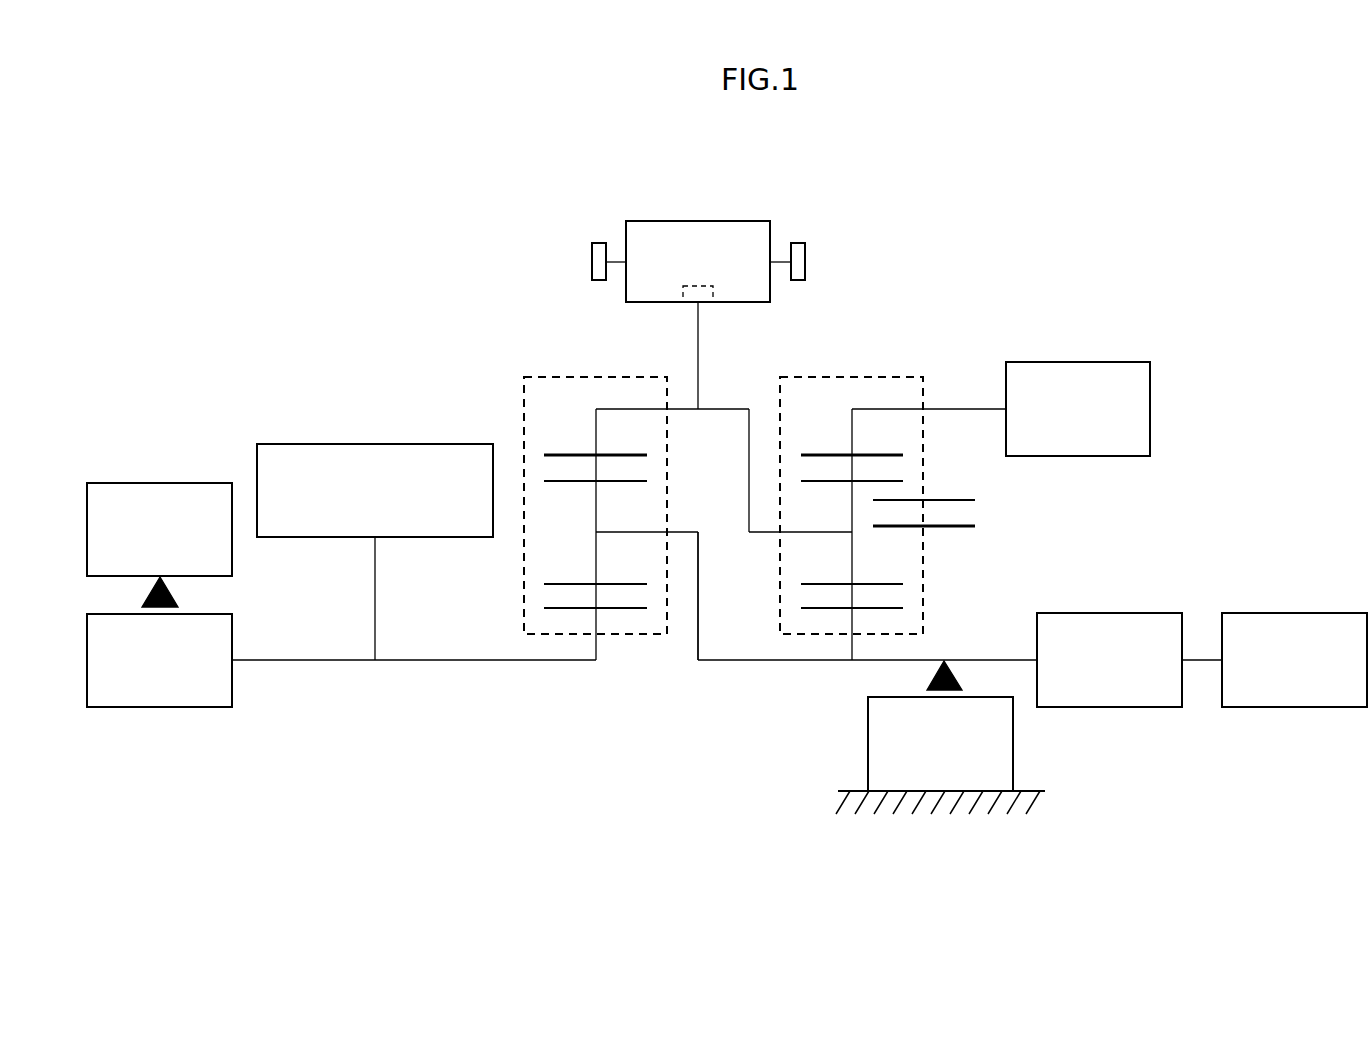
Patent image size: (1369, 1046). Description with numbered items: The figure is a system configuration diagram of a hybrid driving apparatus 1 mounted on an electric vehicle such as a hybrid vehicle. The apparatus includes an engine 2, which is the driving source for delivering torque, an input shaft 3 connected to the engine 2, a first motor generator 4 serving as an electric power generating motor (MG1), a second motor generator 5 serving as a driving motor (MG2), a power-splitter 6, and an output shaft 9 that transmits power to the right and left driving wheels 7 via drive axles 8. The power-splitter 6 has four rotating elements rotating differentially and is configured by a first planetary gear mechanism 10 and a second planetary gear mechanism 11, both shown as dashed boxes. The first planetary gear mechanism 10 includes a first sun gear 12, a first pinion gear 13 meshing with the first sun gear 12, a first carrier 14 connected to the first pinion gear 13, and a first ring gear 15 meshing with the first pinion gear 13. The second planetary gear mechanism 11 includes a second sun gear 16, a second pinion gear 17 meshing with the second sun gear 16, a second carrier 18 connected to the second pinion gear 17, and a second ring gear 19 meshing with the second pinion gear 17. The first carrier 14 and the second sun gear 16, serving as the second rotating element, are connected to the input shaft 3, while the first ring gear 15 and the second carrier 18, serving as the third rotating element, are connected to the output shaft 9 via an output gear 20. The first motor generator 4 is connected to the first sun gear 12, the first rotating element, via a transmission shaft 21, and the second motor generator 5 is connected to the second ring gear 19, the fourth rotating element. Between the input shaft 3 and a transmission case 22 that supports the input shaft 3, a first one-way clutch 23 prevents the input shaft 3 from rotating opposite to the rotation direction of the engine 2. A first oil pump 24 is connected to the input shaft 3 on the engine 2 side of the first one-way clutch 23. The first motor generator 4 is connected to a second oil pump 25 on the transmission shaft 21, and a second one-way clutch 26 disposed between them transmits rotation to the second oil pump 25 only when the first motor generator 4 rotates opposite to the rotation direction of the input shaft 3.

The hybrid driving apparatus 1 is at (1112, 242).
The engine 2 is at (1275, 613).
The input shaft 3 is at (1200, 663).
The first motor generator 4 is at (313, 444).
The second motor generator 5 is at (1090, 362).
The power-splitter 6 is at (577, 738).
The driving wheels 7 is at (600, 243).
The drive axles 8 is at (613, 258).
The output shaft 9 is at (712, 221).
The first planetary gear mechanism 10 is at (545, 376).
The second planetary gear mechanism 11 is at (910, 376).
The first sun gear 12 is at (566, 608).
The first pinion gear 13 is at (565, 584).
The first carrier 14 is at (696, 584).
The first ring gear 15 is at (596, 424).
The second sun gear 16 is at (884, 608).
The second pinion gear 17 is at (882, 584).
The second carrier 18 is at (766, 535).
The second ring gear 19 is at (886, 409).
The output gear 20 is at (683, 298).
The transmission shaft 21 is at (422, 662).
The transmission case 22 is at (840, 800).
The first one-way clutch 23 is at (868, 730).
The first oil pump 24 is at (1118, 613).
The second oil pump 25 is at (187, 483).
The second one-way clutch 26 is at (187, 707).